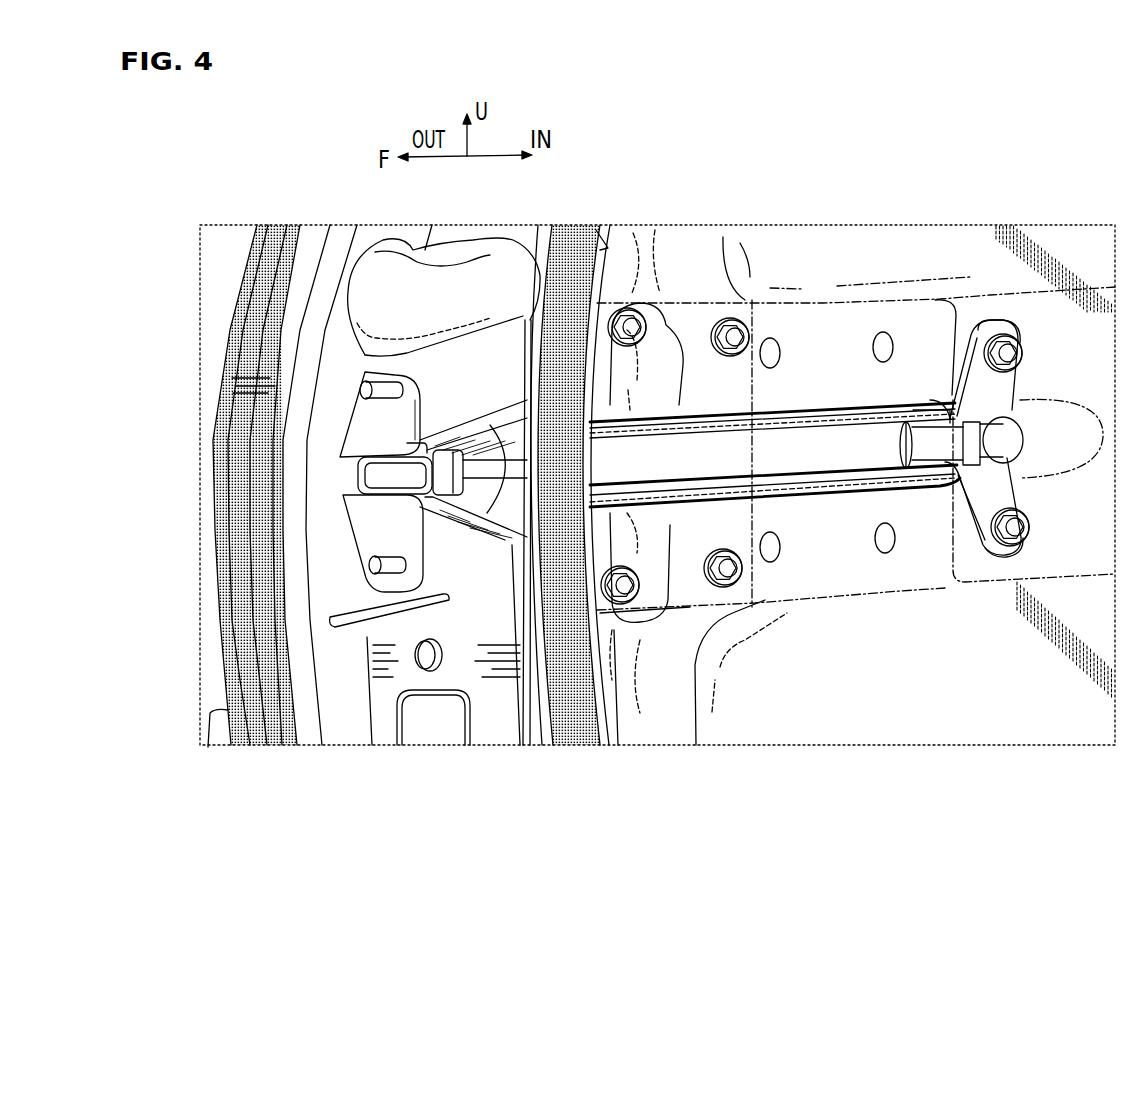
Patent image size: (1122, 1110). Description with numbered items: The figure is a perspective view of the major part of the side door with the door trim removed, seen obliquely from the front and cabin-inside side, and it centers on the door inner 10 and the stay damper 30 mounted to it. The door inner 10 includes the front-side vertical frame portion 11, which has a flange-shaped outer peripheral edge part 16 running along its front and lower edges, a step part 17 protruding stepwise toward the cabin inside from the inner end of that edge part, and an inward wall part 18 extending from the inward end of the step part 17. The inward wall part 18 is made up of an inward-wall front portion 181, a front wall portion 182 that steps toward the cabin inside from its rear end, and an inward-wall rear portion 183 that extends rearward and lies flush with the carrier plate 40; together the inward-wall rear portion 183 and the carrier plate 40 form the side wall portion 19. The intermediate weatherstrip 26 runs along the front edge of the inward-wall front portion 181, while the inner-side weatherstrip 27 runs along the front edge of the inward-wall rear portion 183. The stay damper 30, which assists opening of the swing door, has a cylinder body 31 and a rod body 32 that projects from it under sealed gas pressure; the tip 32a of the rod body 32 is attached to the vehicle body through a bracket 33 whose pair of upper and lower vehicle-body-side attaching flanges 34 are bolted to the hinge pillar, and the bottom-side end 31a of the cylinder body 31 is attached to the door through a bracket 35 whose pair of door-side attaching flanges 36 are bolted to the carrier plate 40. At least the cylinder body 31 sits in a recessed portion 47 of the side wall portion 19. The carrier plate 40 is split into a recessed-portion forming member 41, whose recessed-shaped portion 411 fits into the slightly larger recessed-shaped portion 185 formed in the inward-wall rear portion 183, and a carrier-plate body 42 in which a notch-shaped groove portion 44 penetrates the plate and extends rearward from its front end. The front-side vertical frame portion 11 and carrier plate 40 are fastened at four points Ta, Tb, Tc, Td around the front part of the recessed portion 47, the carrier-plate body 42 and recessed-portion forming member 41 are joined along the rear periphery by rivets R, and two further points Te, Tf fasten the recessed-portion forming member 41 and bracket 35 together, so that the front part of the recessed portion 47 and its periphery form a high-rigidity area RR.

The door inner 10 is at (1004, 708).
The side wall portion 19 is at (1052, 800).
The front-side vertical frame portion 11 is at (441, 752).
The outer peripheral edge part 16 is at (232, 266).
The step part 17 is at (267, 723).
The inward wall part 18 is at (383, 824).
The inward-wall front portion 181 is at (348, 747).
The front wall portion 182 is at (492, 747).
The inward-wall rear portion 183 is at (540, 747).
The recessed-shaped portion 185 is at (450, 425).
The intermediate weatherstrip 26 is at (211, 742).
The inner-side weatherstrip 27 is at (585, 750).
The stay damper 30 is at (848, 405).
The cylinder body 31 is at (897, 480).
The bottom-side end 31a is at (1015, 440).
The rod body 32 is at (487, 497).
The tip 32a is at (368, 477).
The bracket 33 is at (377, 590).
The vehicle-body-side attaching flanges 34 is at (363, 430).
The bracket 35 is at (1013, 383).
The door-side attaching flanges 36 is at (1010, 328).
The carrier plate 40 is at (590, 240).
The recessed-portion forming member 41 is at (1000, 444).
The recessed-shaped portion 411 is at (860, 480).
The carrier-plate body 42 is at (843, 243).
The notch-shaped groove portion 44 is at (829, 487).
The recessed portion 47 is at (808, 412).
The rivets R is at (902, 548).
The high-rigidity area RR is at (688, 300).
The fastening point Ta is at (648, 327).
The fastening point Tb is at (715, 358).
The fastening point Tc is at (630, 617).
The fastening point Td is at (748, 577).
The fastening point Te is at (997, 328).
The fastening point Tf is at (1036, 531).